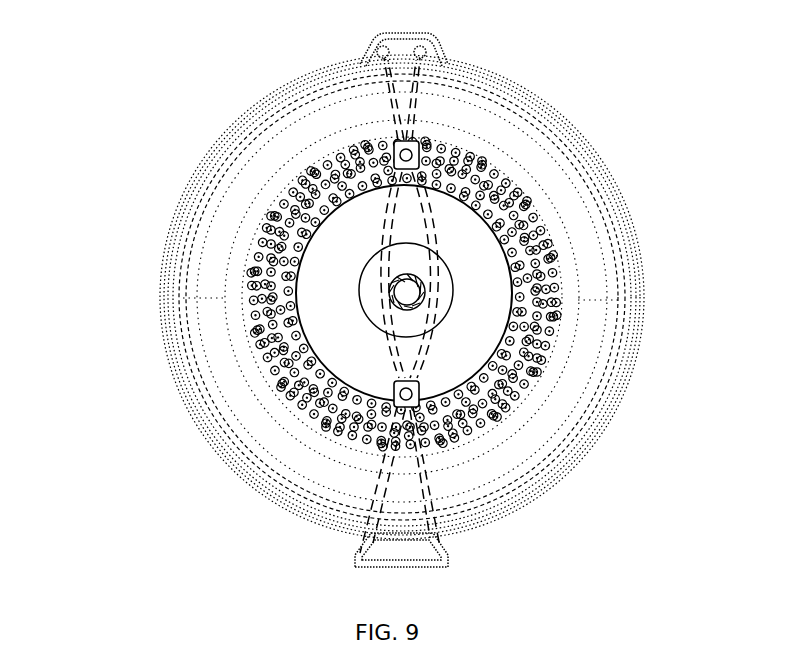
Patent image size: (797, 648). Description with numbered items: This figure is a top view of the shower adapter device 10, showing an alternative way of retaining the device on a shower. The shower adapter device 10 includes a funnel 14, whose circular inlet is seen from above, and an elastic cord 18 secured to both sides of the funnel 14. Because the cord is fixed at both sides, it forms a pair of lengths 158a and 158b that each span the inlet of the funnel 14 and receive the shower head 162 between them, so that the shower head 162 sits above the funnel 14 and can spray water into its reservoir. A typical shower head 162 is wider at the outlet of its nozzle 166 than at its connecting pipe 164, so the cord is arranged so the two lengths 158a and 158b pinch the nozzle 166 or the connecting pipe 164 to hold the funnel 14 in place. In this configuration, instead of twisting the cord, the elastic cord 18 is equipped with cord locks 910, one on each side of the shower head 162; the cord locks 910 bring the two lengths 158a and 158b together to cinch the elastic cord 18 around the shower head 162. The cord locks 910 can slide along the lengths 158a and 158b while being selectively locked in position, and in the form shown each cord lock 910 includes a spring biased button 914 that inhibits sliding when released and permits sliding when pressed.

The shower adapter device 10 is at (135, 130).
The funnel 14 is at (158, 301).
The elastic cord 18 is at (383, 453).
The first length of the elastic cord 158a is at (390, 340).
The second length of the elastic cord 158b is at (423, 343).
The shower head 162 is at (320, 276).
The connecting pipe 164 is at (422, 280).
The nozzle 166 is at (463, 237).
The cord lock 910 is at (419, 152).
The spring biased button 914 is at (394, 155).